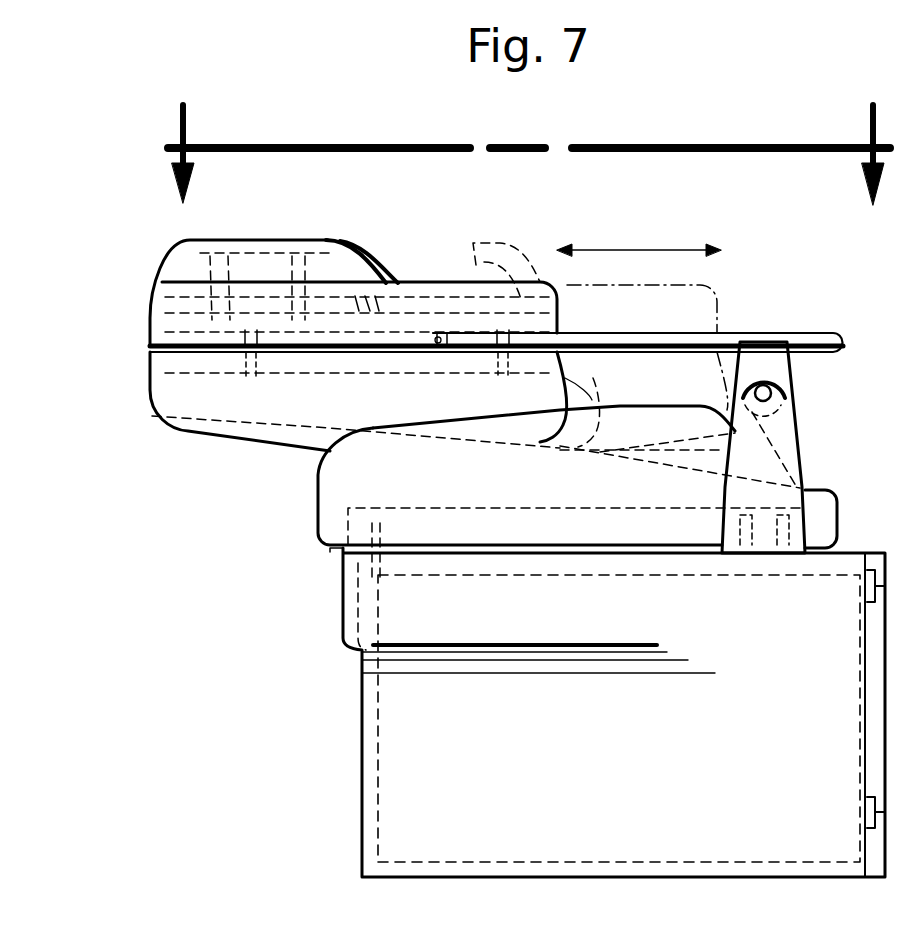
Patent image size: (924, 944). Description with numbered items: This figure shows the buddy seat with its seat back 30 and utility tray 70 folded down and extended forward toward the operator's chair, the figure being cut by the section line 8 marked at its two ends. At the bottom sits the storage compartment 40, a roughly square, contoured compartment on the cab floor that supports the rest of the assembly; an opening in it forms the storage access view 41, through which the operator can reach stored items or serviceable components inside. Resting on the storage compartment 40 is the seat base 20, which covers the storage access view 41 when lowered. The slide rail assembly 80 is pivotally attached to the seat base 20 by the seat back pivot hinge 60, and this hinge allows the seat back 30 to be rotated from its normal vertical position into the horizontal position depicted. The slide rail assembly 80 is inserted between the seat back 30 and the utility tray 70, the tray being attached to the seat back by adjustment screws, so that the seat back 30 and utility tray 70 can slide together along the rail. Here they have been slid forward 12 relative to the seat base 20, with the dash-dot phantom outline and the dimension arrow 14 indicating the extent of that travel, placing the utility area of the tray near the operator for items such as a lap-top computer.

The section line 8- 8 is at (529, 153).
The forward sliding direction 12 is at (130, 427).
The adjustment travel distance 14 is at (658, 351).
The seat base 20 is at (480, 525).
The seat back 30 is at (322, 366).
The storage compartment 40 is at (362, 764).
The storage access view 41 is at (518, 775).
The seat back pivot hinge 60 is at (790, 436).
The utility tray 70 is at (374, 252).
The slide rail assembly 80 is at (814, 330).